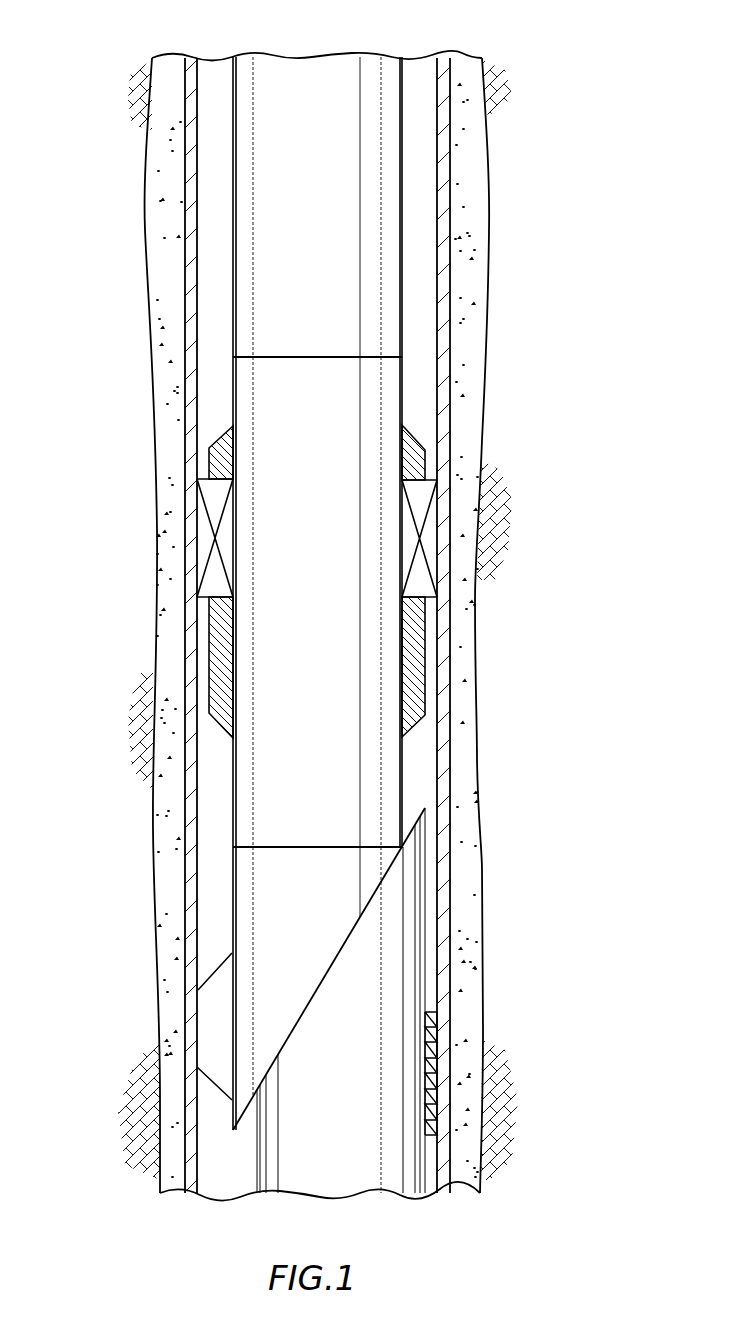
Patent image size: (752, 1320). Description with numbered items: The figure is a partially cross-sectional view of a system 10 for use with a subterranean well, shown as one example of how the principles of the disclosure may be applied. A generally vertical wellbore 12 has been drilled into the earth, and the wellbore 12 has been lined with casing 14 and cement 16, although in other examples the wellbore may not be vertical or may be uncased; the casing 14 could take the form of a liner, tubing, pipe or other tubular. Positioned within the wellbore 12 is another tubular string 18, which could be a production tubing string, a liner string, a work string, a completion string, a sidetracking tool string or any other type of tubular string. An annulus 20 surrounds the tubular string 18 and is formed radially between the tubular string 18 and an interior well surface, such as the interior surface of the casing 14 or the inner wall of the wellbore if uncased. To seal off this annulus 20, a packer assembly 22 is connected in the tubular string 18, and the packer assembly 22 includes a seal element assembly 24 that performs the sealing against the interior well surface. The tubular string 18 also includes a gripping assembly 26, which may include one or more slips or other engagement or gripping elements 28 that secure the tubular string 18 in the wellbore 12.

The system 10 is at (597, 76).
The wellbore 12 is at (484, 282).
The casing 14 is at (185, 254).
The cement 16 is at (162, 300).
The tubular string 18 is at (403, 248).
The annulus 20 is at (212, 820).
The packer assembly 22 is at (217, 435).
The seal element assembly 24 is at (196, 524).
The gripping assembly 26 is at (426, 870).
The gripping elements 28 is at (437, 1030).